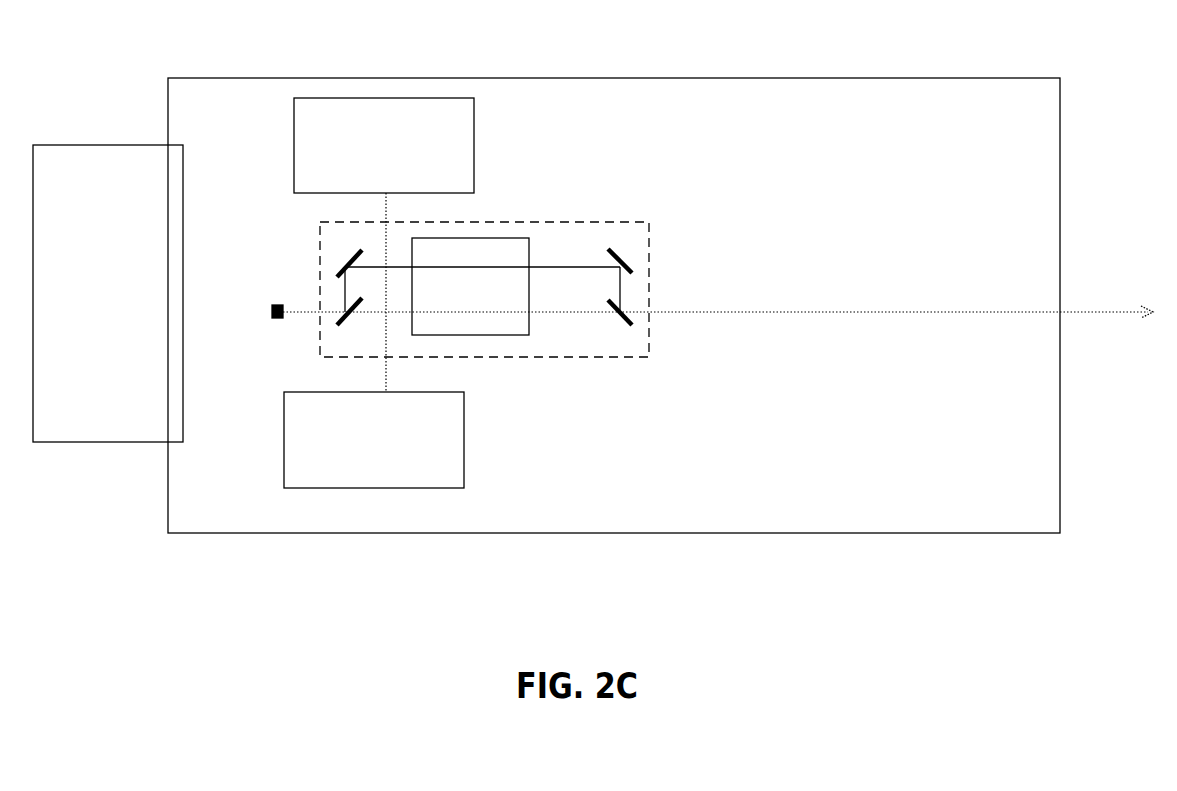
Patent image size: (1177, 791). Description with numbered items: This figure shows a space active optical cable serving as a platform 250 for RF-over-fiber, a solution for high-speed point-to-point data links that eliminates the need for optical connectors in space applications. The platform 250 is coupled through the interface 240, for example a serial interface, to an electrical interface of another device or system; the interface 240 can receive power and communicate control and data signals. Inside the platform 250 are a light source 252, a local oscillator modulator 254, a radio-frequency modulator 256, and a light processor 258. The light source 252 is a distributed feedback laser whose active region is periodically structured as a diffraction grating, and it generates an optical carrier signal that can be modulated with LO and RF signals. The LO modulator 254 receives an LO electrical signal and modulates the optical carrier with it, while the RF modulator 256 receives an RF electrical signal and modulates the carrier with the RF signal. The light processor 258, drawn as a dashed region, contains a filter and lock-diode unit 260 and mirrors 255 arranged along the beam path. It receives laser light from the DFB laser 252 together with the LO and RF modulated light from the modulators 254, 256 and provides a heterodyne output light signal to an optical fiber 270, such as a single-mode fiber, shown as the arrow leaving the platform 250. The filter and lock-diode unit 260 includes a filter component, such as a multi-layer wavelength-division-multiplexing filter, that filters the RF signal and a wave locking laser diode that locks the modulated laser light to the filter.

The interface 240 is at (108, 293).
The platform 250 is at (984, 78).
The light source 252 is at (275, 294).
The local oscillator modulator 254 is at (384, 245).
The mirrors 255 is at (625, 257).
The radio-frequency modulator 256 is at (374, 440).
The light processor 258 is at (484, 289).
The filter and lock-diode unit 260 is at (470, 286).
The optical fiber 270 is at (913, 308).